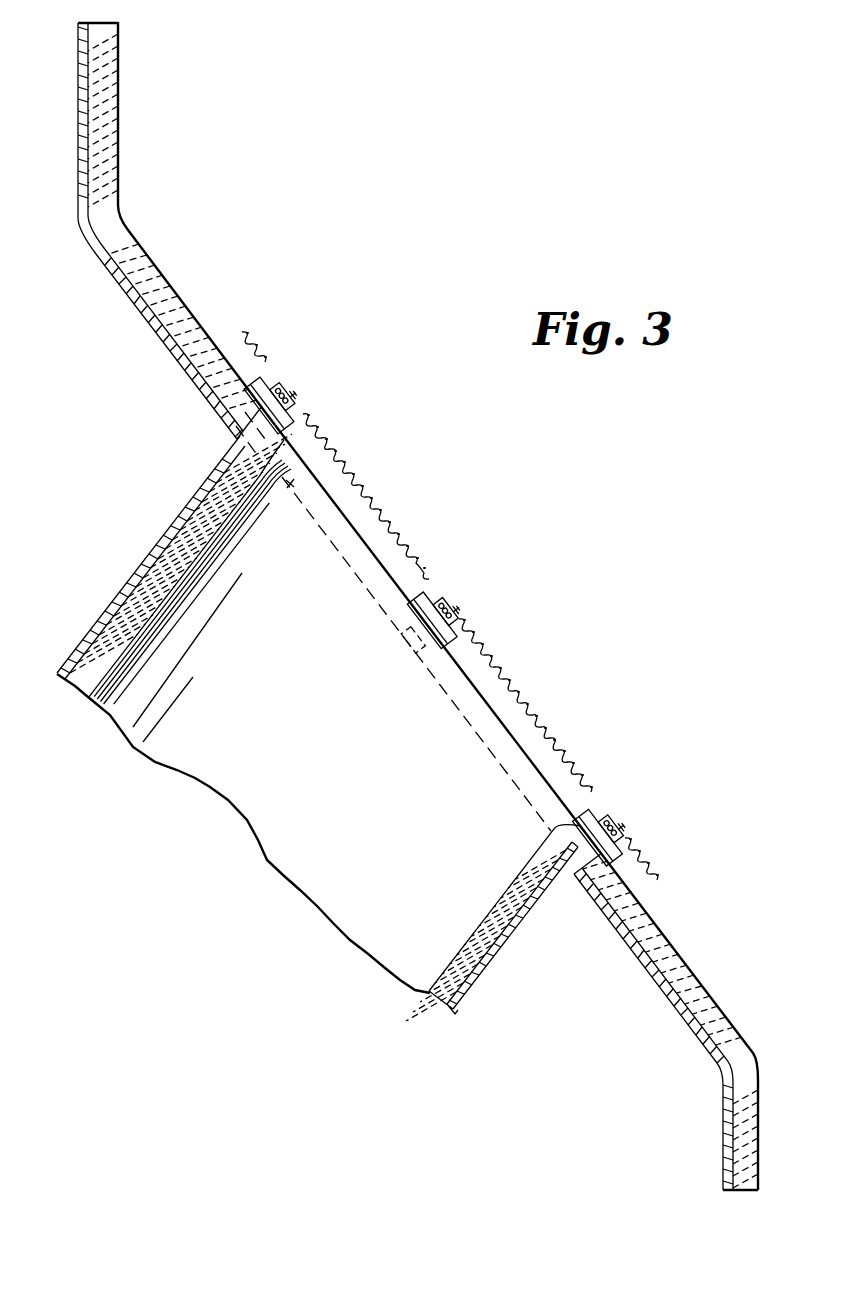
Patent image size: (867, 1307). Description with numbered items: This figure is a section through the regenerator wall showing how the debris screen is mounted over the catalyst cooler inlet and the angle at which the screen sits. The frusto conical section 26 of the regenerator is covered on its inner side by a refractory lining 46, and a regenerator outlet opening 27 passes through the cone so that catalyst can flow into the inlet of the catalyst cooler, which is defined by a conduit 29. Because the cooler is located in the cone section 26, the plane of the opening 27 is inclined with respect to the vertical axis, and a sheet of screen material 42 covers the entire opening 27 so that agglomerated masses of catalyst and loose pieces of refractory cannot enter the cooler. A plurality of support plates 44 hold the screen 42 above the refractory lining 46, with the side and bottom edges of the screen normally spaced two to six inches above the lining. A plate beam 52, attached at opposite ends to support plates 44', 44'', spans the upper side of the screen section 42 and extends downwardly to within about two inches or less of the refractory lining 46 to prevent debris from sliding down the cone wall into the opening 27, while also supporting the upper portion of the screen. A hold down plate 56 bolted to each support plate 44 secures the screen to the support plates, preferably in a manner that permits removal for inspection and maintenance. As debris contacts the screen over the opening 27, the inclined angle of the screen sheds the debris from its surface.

The frusto conical section 26 is at (637, 960).
The regenerator outlet opening 27 is at (368, 540).
The conduit 29 is at (163, 530).
The sheet of screen material 42 is at (510, 673).
The support plates 44 is at (628, 820).
The support plate 44' is at (376, 491).
The support plate 44'' is at (254, 347).
The refractory lining 46 is at (179, 297).
The plate beam 52 is at (252, 378).
The hold down plate 56 is at (425, 592).